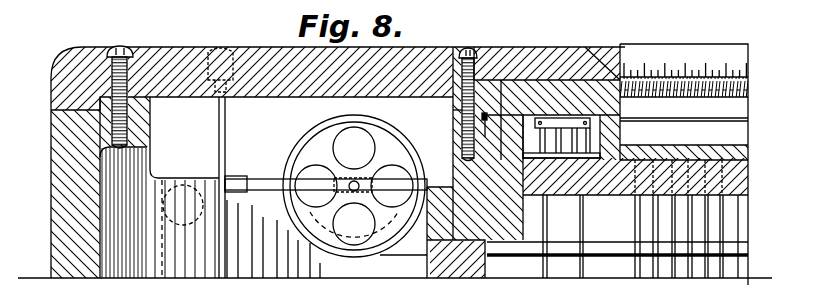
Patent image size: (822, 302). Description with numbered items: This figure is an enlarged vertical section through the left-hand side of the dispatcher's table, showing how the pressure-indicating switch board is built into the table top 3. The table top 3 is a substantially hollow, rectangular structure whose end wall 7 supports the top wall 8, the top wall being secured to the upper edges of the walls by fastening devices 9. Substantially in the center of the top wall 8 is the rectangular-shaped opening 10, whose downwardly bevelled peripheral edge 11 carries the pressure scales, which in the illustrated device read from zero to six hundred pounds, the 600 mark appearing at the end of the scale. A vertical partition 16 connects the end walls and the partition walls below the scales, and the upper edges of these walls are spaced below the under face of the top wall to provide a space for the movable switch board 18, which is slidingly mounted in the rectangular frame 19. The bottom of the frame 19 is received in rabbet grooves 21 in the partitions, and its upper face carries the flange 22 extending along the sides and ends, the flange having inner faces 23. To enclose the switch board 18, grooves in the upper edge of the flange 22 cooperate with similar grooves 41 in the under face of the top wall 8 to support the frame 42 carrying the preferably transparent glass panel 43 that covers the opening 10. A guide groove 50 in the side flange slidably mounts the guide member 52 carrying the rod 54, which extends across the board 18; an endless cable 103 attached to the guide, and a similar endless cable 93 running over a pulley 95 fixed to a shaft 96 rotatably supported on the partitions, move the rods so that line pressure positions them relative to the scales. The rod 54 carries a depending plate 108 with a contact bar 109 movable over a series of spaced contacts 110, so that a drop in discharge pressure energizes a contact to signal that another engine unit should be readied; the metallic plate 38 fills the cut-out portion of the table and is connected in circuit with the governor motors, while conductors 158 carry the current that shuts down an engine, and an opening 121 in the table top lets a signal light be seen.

The table top 3 is at (52, 221).
The end wall 7 is at (67, 178).
The top wall 8 is at (571, 100).
The fastening devices 9 is at (112, 60).
The rectangular-shaped opening 10 is at (636, 77).
The bevelled peripheral edge 11 is at (604, 56).
The vertical partition 16 is at (460, 273).
The movable switch board 18 is at (616, 186).
The frame 19 is at (453, 57).
The rabbet grooves 21 is at (519, 200).
The flange 22 is at (500, 147).
The inner faces 23 is at (504, 168).
The metallic plate 38 is at (750, 153).
The grooves 41 is at (548, 78).
The frame 42 is at (580, 100).
The glass panel 43 is at (729, 97).
The guide groove 50 is at (462, 152).
The guide member 52 is at (466, 143).
The rod 54 is at (737, 120).
The endless cable 93 is at (627, 257).
The pulley 95 is at (308, 140).
The shaft 96 is at (350, 183).
The endless cable 103 is at (455, 108).
The depending plate 108 is at (583, 146).
The contact bar 109 is at (556, 136).
The contact 110 is at (665, 148).
The opening 121 is at (672, 60).
The conductors 158 is at (738, 225).
The scale marking 600 is at (684, 77).